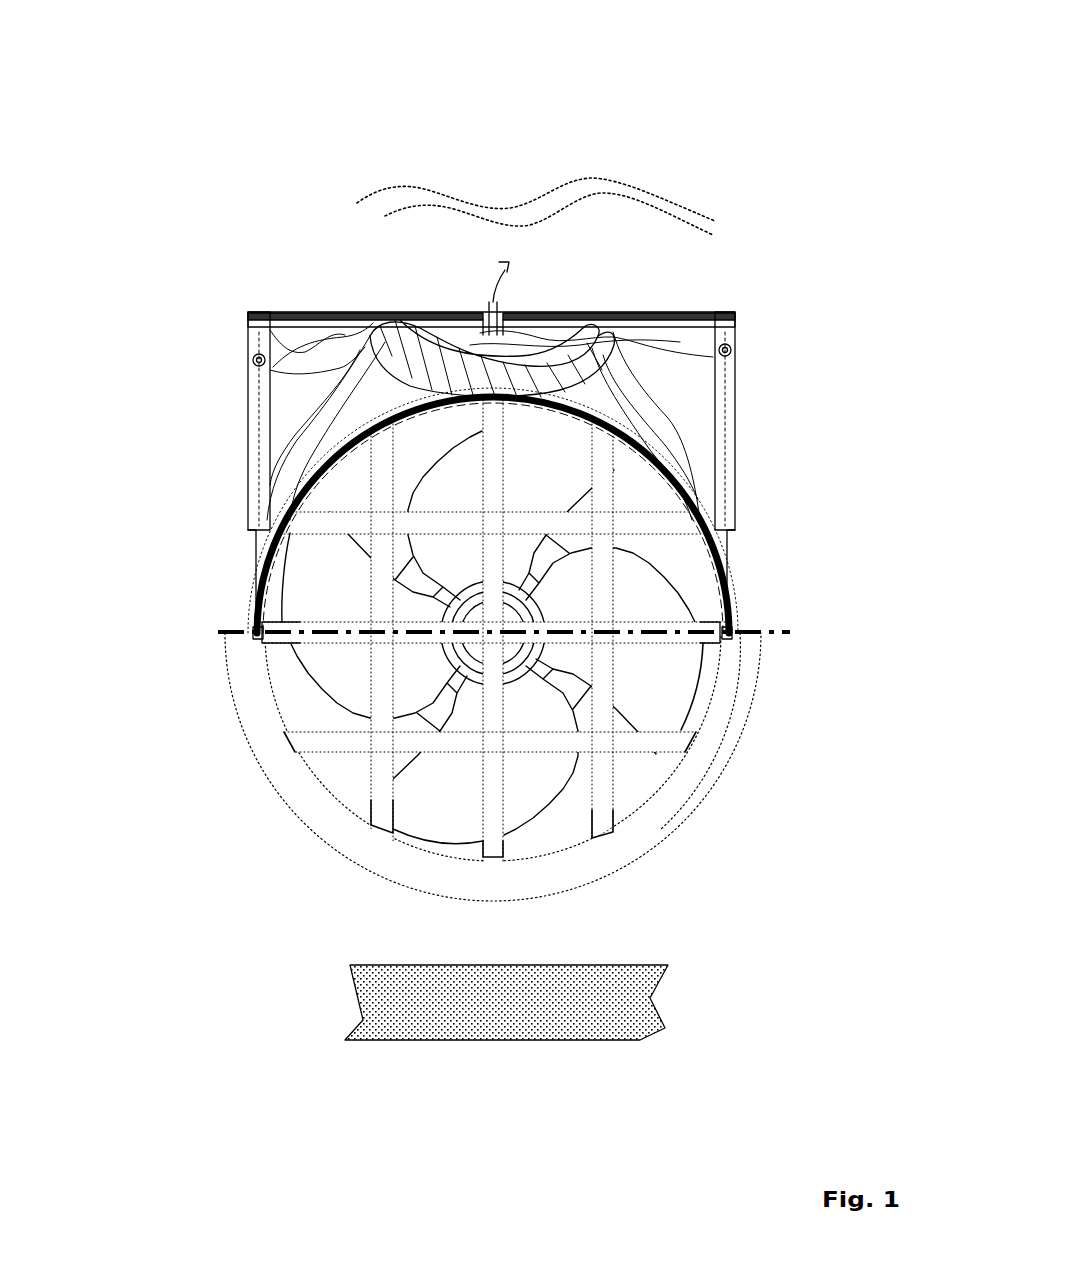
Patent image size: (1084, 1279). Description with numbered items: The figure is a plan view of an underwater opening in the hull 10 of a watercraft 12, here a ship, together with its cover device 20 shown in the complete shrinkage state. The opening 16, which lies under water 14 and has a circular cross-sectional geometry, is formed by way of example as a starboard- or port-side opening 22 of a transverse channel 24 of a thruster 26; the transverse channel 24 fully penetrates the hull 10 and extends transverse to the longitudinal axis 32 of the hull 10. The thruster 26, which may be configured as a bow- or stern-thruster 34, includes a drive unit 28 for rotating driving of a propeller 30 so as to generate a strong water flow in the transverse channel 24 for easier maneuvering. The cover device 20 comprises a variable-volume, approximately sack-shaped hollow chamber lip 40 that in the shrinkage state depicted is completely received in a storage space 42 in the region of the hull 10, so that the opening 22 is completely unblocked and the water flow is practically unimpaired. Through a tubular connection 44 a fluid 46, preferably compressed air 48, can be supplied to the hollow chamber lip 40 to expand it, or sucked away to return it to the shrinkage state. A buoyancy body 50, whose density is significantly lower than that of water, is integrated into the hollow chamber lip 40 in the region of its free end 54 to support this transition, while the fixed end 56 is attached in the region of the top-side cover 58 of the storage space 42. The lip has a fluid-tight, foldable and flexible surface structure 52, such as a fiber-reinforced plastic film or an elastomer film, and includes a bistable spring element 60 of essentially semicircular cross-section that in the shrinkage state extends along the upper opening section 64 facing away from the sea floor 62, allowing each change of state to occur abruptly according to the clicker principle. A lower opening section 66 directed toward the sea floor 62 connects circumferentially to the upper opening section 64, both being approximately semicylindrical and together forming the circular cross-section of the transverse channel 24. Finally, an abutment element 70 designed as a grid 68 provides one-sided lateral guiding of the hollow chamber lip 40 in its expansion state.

The hull 10 is at (434, 282).
The watercraft 12 is at (468, 294).
The water 14 is at (620, 186).
The opening 16 is at (416, 480).
The cover device 20 is at (307, 360).
The starboard- or port-side opening 22 is at (416, 480).
The transverse channel 24 is at (511, 664).
The thruster 26 is at (511, 664).
The drive unit 28 is at (468, 429).
The propeller 30 is at (635, 778).
The longitudinal axis 32 is at (233, 632).
The bow- or stern-thruster 34 is at (511, 664).
The hollow chamber lip 40 is at (664, 357).
The storage space 42 is at (277, 323).
The tubular connection 44 is at (500, 302).
The fluid 46 is at (688, 265).
The compressed air 48 is at (500, 285).
The buoyancy body 50 is at (392, 337).
The surface structure 52 is at (322, 412).
The free end 54 is at (520, 344).
The fixed end 56 is at (342, 320).
The top-side cover 58 is at (280, 322).
The bistable spring element 60 is at (298, 500).
The sea floor 62 is at (527, 1013).
The upper opening section 64 is at (553, 424).
The lower opening section 66 is at (341, 805).
The grid 68 is at (409, 747).
The abutment element 70 is at (378, 667).